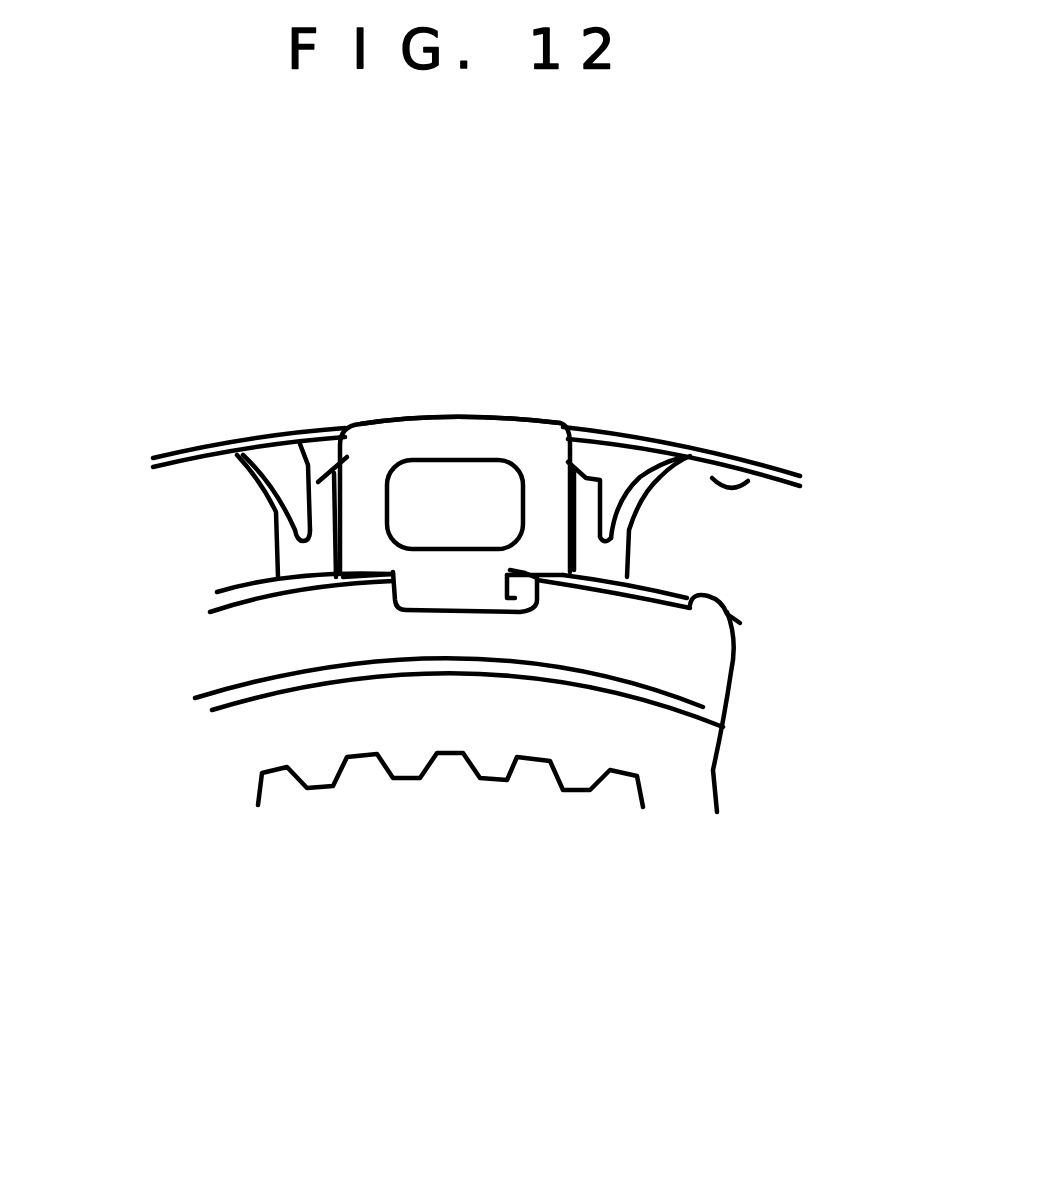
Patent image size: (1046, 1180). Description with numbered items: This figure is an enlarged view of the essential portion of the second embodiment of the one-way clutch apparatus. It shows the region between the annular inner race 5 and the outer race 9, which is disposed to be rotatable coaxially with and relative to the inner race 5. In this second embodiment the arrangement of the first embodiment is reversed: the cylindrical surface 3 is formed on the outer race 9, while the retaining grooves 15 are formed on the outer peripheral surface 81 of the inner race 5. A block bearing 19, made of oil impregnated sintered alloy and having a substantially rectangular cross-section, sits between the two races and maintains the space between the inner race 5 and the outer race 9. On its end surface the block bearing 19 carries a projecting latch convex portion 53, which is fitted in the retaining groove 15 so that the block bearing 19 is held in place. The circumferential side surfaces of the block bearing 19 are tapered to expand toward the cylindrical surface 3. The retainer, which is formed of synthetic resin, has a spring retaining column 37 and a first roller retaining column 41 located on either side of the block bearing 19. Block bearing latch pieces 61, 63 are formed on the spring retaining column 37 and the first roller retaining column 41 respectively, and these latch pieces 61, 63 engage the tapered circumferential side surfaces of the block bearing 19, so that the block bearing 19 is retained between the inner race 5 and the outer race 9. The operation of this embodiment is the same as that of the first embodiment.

The cylindrical surface 3 is at (760, 468).
The inner race 5 is at (248, 828).
The outer race 9 is at (462, 348).
The retaining groove 15 is at (506, 598).
The block bearing 19 is at (390, 410).
The spring retaining column 37 is at (665, 526).
The first roller retaining column 41 is at (262, 513).
The latch convex portion 53 is at (442, 590).
The block bearing latch piece 61 is at (318, 482).
The block bearing latch piece 63 is at (586, 478).
The outer peripheral surface 81 is at (724, 747).